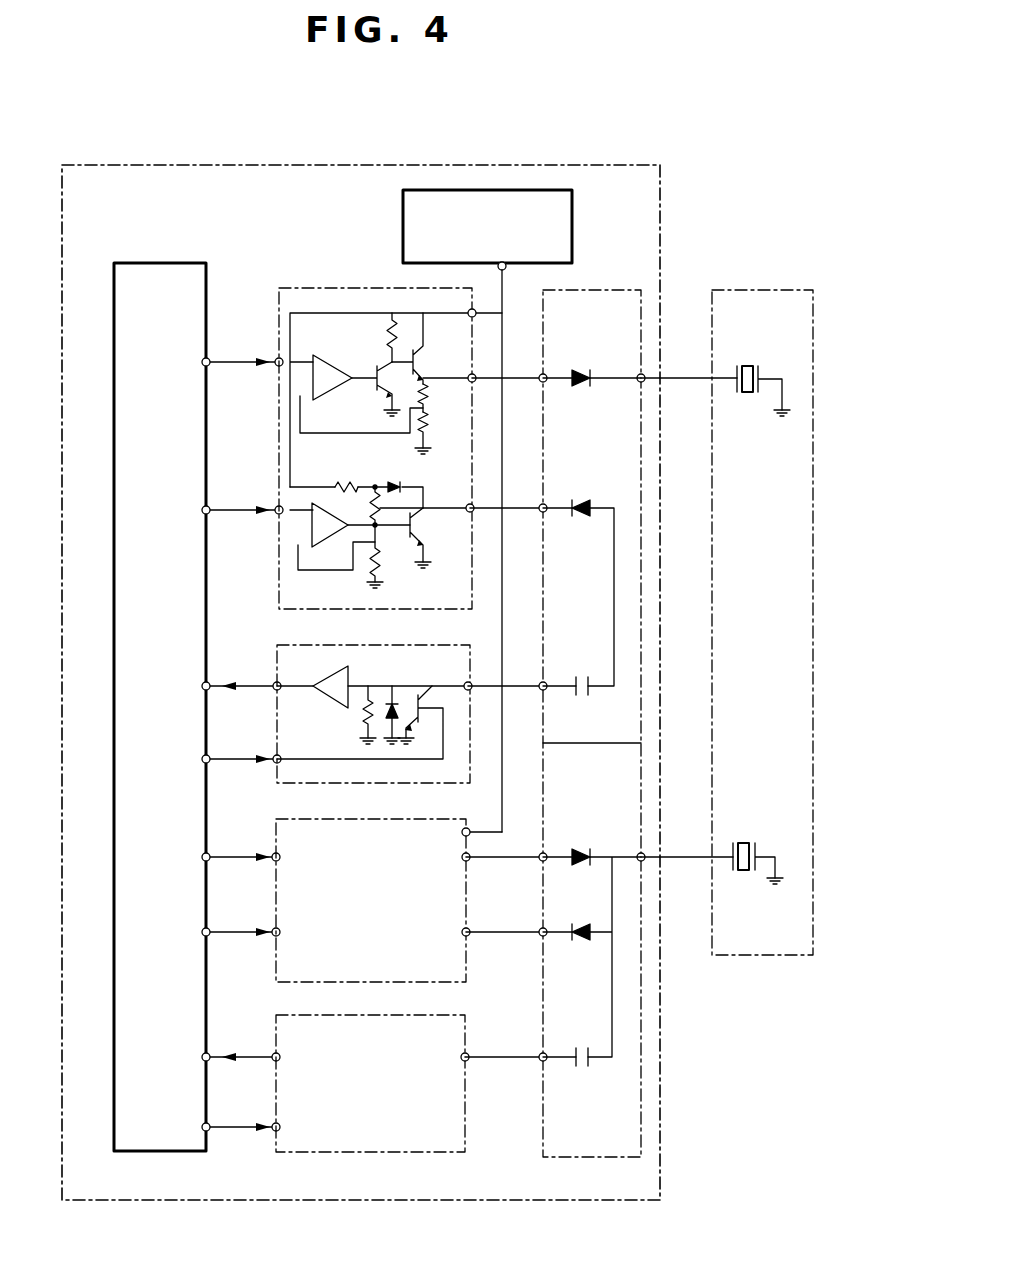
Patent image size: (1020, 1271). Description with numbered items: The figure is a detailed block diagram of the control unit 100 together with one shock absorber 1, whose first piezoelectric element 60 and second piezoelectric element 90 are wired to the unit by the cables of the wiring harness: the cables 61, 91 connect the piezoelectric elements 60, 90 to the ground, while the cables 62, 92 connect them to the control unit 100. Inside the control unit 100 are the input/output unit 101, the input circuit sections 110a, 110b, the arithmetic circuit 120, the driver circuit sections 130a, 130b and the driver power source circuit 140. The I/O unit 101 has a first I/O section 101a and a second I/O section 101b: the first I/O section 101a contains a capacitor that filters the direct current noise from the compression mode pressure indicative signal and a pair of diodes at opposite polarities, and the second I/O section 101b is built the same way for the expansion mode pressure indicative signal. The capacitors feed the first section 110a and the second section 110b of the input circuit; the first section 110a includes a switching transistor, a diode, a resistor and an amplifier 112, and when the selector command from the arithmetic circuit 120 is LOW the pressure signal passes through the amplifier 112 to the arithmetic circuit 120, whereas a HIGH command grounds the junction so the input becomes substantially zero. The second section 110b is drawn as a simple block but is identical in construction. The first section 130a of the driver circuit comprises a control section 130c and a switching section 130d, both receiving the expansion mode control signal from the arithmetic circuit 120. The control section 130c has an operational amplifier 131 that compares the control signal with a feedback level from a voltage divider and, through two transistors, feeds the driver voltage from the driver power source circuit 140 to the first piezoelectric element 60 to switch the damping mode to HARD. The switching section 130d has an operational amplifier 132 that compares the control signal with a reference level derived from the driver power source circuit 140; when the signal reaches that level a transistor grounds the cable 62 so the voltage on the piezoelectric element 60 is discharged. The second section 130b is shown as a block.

The shock absorber 1 is at (742, 290).
The first piezoelectric element 60 is at (748, 365).
The cable 61 is at (782, 408).
The cable 62 is at (681, 377).
The second piezoelectric element 90 is at (745, 842).
The cable 91 is at (777, 878).
The cable 92 is at (680, 856).
The control unit 100 is at (509, 163).
The input/output (I/O) unit 101 is at (612, 286).
The first I/O section 101a is at (592, 534).
The second I/O section 101b is at (592, 980).
The first section of the input circuit 110a is at (377, 655).
The second section of the input circuit 110b is at (372, 1027).
The amplifier 112 is at (316, 665).
The arithmetic circuit 120 is at (180, 262).
The first section of the driver circuit 130a is at (340, 288).
The second section of the driver circuit 130b is at (370, 830).
The control section 130c is at (266, 394).
The switching section 130d is at (264, 558).
The operational amplifier 131 is at (396, 398).
The operational amplifier 132 is at (382, 511).
The driver power source circuit 140 is at (403, 210).